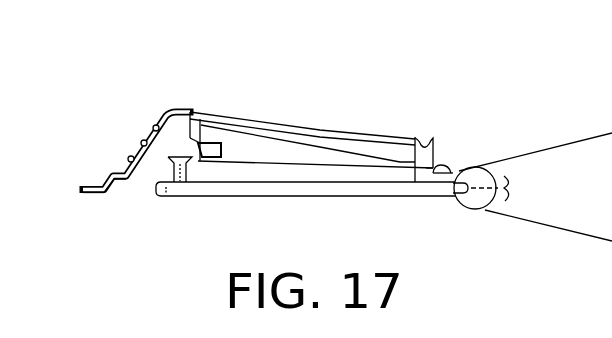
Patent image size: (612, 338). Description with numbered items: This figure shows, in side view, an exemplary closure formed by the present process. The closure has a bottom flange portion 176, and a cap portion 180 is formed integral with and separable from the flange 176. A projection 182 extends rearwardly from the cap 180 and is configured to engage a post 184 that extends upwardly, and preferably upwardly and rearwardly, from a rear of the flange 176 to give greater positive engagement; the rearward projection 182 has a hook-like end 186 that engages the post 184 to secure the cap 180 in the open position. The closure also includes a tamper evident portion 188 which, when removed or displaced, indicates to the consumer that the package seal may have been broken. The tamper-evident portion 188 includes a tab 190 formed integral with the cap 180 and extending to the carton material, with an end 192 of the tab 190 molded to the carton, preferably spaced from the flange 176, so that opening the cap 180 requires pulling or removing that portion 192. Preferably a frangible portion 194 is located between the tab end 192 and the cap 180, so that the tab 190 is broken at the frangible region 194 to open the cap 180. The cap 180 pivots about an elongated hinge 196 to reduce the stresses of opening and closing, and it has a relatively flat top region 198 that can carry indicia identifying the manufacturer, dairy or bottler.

The bottom flange portion 176 is at (158, 197).
The cap portion 180 is at (375, 131).
The projection 182 is at (427, 138).
The post 184 is at (447, 166).
The hook-like end 186 is at (429, 158).
The tamper evident portion 188 is at (108, 128).
The tab 190 is at (148, 140).
The end of the tab 192 is at (96, 193).
The frangible portion 194 is at (107, 173).
The elongated hinge 196 is at (428, 166).
The flat top region 198 is at (293, 125).